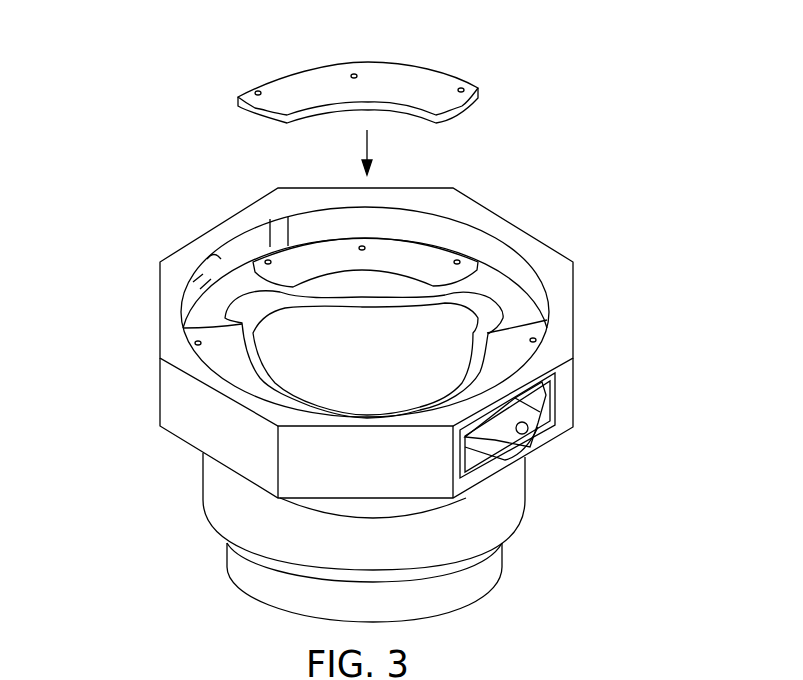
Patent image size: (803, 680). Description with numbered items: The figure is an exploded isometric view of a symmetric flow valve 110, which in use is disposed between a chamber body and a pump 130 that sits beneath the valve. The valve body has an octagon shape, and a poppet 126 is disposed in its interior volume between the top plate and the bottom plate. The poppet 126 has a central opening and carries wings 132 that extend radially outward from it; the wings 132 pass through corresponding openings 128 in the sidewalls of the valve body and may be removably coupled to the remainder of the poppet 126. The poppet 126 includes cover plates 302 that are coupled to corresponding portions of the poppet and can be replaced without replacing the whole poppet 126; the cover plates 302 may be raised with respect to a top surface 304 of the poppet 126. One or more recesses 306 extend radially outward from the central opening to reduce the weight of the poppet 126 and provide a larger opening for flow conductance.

The symmetric flow valve 110 is at (146, 274).
The poppet 126 is at (303, 308).
The openings in the sidewalls 128 is at (552, 430).
The pump 130 is at (203, 488).
The wings 132 is at (537, 410).
The cover plates 302 is at (279, 51).
The top surface of the poppet 304 is at (362, 270).
The recesses 306 is at (243, 302).